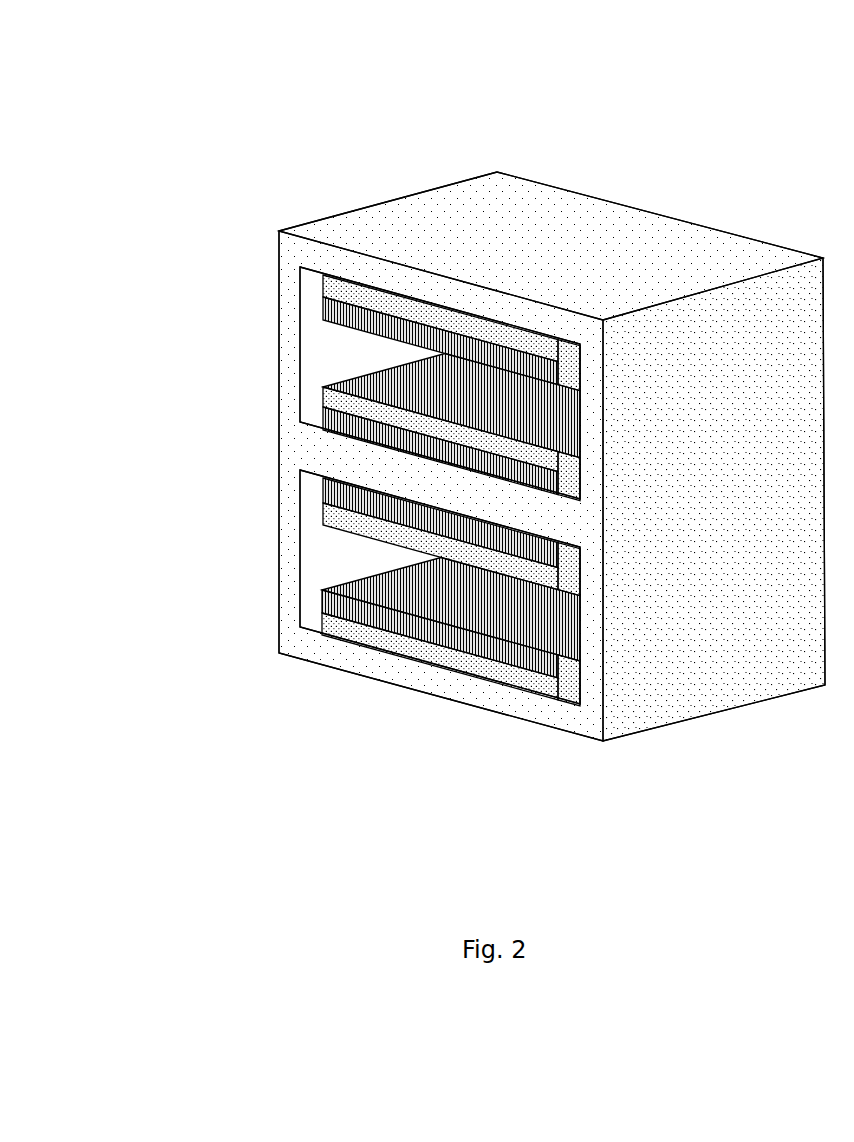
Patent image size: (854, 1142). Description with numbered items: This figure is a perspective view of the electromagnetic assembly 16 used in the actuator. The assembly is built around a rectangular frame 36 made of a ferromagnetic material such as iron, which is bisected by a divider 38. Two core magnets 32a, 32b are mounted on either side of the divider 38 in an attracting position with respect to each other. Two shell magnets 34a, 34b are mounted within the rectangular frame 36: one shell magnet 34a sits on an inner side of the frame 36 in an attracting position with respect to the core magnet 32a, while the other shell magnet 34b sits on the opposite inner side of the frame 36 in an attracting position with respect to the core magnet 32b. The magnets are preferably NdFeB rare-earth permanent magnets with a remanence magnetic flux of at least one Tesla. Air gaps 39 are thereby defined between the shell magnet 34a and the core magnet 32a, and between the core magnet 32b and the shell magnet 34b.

The electromagnetic assembly 16 is at (608, 108).
The rectangular frame 36 is at (457, 235).
The divider 38 is at (543, 516).
The core magnet 32a is at (443, 427).
The core magnet 32b is at (428, 538).
The shell magnet 34a is at (323, 287).
The shell magnet 34b is at (378, 632).
The air gaps 39 is at (340, 352).